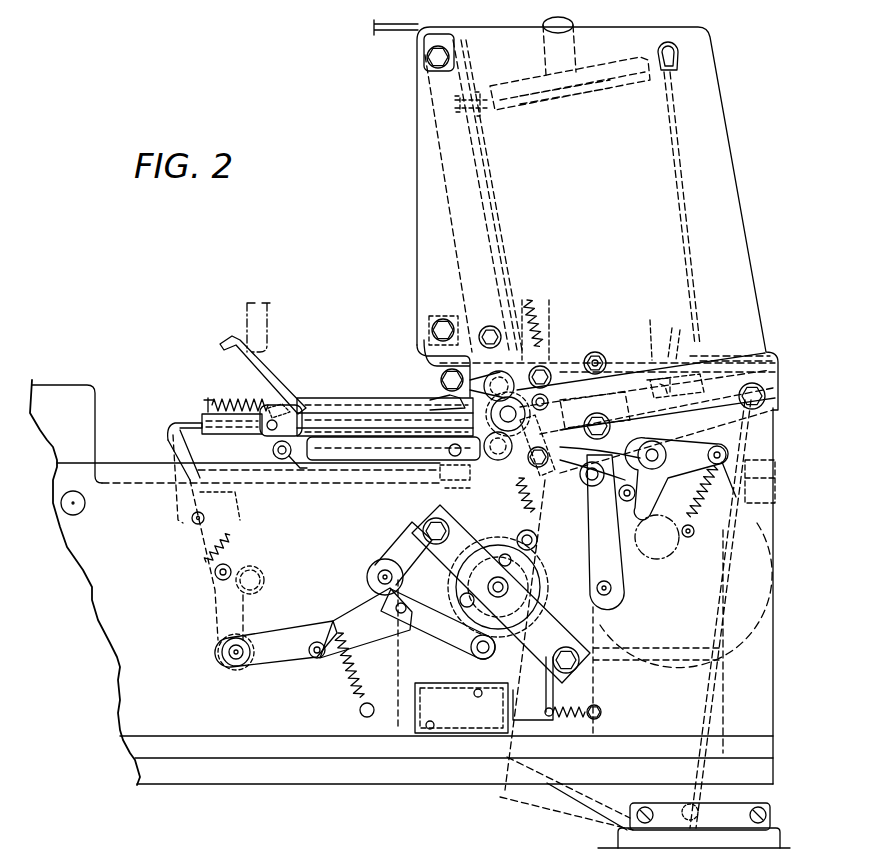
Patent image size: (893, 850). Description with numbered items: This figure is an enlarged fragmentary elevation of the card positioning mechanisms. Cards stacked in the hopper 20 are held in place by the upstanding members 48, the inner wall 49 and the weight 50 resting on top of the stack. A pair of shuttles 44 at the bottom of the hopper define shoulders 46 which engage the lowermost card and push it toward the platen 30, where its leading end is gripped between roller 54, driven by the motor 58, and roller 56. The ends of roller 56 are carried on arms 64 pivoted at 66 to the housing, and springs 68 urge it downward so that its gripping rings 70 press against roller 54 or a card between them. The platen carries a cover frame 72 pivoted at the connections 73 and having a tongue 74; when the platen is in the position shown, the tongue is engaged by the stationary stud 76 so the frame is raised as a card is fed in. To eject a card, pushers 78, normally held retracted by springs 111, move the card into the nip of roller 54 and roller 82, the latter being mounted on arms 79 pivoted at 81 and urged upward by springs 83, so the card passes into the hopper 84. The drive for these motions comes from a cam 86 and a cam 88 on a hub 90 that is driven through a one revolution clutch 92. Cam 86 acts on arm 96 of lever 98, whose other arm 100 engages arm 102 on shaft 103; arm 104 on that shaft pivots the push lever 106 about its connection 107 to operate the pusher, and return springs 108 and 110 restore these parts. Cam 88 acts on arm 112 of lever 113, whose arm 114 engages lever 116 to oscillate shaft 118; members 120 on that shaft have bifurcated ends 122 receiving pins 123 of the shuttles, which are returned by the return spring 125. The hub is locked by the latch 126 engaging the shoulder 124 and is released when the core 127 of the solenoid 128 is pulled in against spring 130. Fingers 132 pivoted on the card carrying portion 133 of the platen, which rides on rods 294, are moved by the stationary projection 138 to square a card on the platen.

The hopper 20 is at (702, 221).
The upstanding members 48 is at (700, 151).
The inner wall 49 is at (510, 210).
The weight 50 is at (600, 70).
The shuttles 44 is at (636, 360).
The shoulders 46 is at (720, 346).
The members 120 is at (690, 403).
The bifurcated ends 122 is at (676, 334).
The pins 123 is at (654, 341).
The gripping rings 70 is at (445, 352).
The springs 68 is at (538, 322).
The arms 64 is at (578, 348).
The pivotal connection 66 is at (597, 355).
The arms 79 is at (606, 426).
The roller 56 is at (435, 395).
The roller 54 is at (432, 410).
The card carrying portion 133 is at (396, 400).
The cover frame 72 is at (352, 410).
The connections 73 is at (270, 404).
The tongue 74 is at (268, 368).
The stationary stud 76 is at (270, 320).
The springs 111 is at (226, 400).
The pushers 78 is at (190, 423).
The platen 30 is at (212, 390).
The rods 294 is at (290, 462).
The stationary projection 138 is at (442, 470).
The fingers 132 is at (447, 490).
The push lever 106 is at (172, 500).
The connection 107 is at (195, 525).
The return spring 108 is at (193, 548).
The arm 104 is at (215, 600).
The shaft 103 is at (222, 656).
The arm 102 is at (288, 627).
The arm 100 is at (350, 612).
The lever 98 is at (397, 630).
The return spring 110 is at (346, 681).
The cam 86 is at (392, 560).
The arm 96 is at (412, 645).
The cam 88 is at (550, 607).
The hub 90 is at (500, 577).
The one revolution clutch 92 is at (500, 555).
The shoulder 124 is at (545, 572).
The roller 82 is at (522, 472).
The springs 83 is at (514, 496).
The arm 112 is at (600, 552).
The pivot 81 is at (612, 492).
The shaft 118 is at (670, 441).
The lever 116 is at (724, 449).
The return spring 125 is at (740, 512).
The arm 114 is at (628, 569).
The lever 113 is at (626, 589).
The motor 58 is at (750, 578).
The hopper 84 is at (710, 690).
The core 127 is at (530, 700).
The spring 130 is at (586, 703).
The latch 126 is at (572, 690).
The solenoid 128 is at (470, 716).